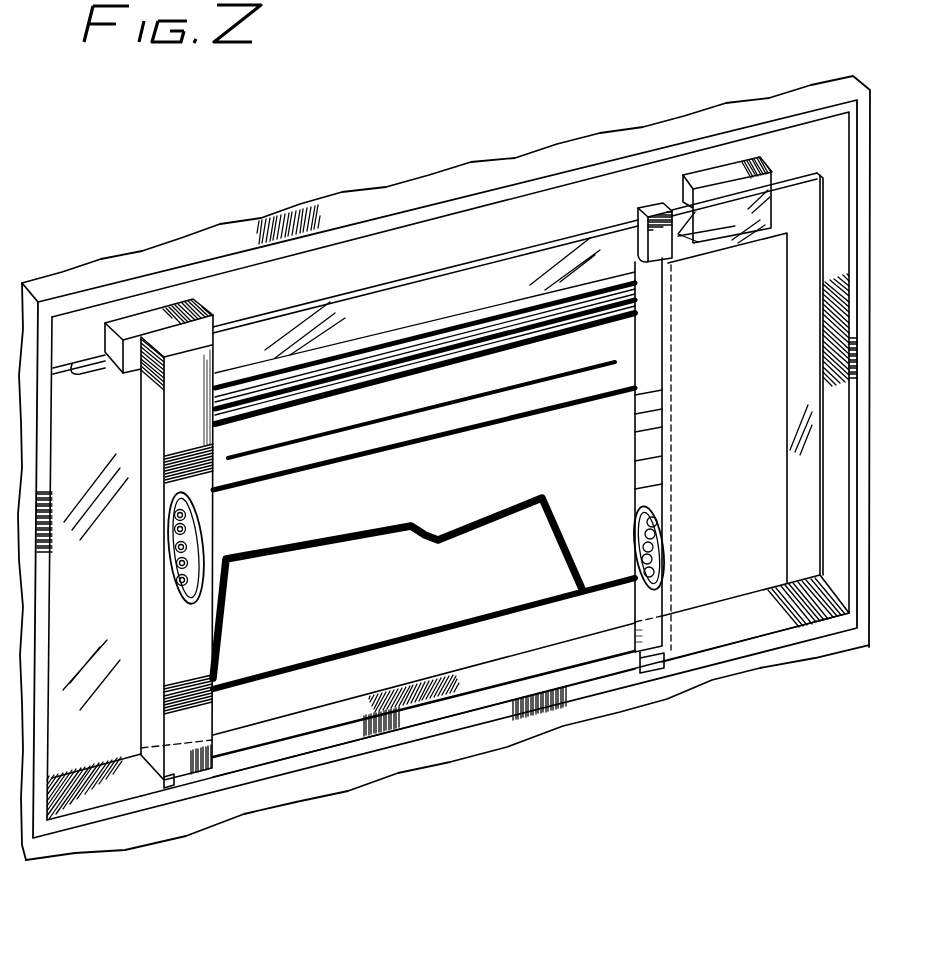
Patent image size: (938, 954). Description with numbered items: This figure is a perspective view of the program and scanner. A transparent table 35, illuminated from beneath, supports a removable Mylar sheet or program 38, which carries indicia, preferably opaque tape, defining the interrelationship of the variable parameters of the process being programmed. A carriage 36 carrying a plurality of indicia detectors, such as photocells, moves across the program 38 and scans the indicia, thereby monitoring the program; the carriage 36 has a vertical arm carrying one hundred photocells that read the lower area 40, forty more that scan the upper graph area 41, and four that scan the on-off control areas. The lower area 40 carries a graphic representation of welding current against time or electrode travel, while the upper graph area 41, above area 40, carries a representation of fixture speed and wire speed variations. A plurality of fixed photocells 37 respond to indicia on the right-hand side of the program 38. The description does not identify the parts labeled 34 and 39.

The transparent pane with mounting bracket 34 is at (760, 157).
The transparent table 35 is at (83, 740).
The carriage 36 is at (198, 649).
The fixed photocells 37 is at (664, 492).
The program 38 is at (371, 626).
The fastener slot with rollers 39 is at (167, 556).
The lower area 40 is at (511, 476).
The upper graph area 41 is at (511, 389).